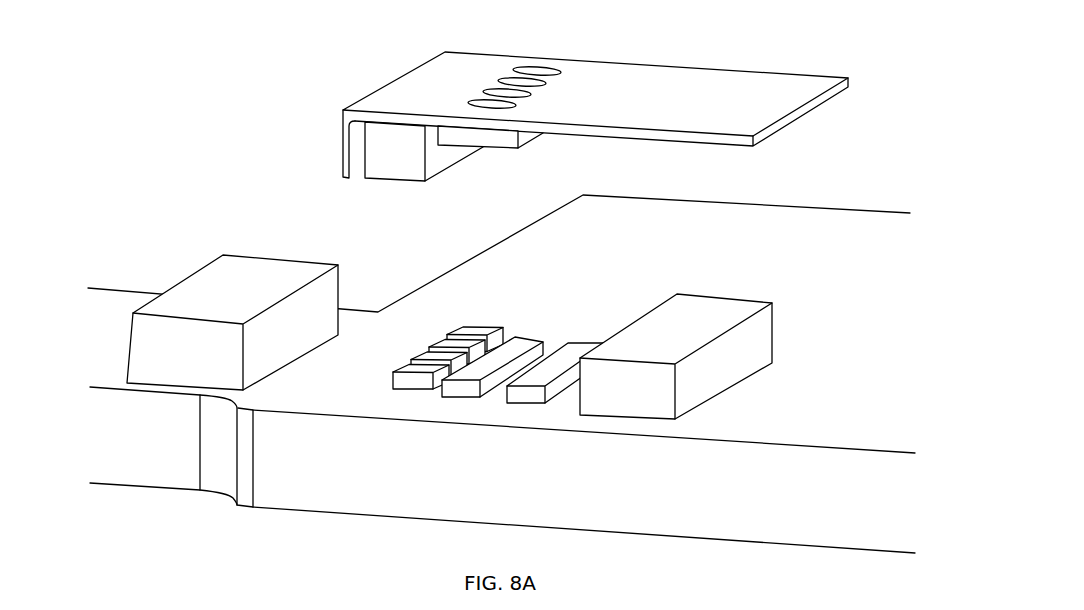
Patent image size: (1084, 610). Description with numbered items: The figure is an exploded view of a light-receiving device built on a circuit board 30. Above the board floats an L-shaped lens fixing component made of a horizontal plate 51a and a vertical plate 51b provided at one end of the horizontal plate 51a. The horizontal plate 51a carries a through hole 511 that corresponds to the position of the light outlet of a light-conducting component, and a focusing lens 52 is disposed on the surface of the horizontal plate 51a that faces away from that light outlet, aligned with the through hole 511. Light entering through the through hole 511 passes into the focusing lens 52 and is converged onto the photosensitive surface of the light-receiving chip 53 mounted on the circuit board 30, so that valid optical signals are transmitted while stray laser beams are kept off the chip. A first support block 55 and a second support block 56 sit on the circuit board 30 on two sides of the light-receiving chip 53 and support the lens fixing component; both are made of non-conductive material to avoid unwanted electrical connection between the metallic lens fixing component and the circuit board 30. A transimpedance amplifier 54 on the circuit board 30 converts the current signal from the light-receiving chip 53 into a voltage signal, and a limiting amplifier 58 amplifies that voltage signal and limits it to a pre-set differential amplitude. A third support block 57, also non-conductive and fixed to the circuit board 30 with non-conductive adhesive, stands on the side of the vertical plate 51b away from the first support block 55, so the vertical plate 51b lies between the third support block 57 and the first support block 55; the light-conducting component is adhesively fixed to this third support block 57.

The circuit board 30 is at (350, 497).
The horizontal plate 51a is at (678, 78).
The vertical plate 51b is at (345, 140).
The through hole 511 is at (543, 68).
The focusing lens 52 is at (502, 140).
The light-receiving chip 53 is at (457, 338).
The transimpedance amplifier 54 is at (523, 343).
The first support block 55 is at (402, 162).
The second support block 56 is at (690, 313).
The third support block 57 is at (220, 280).
The limiting amplifier 58 is at (580, 347).